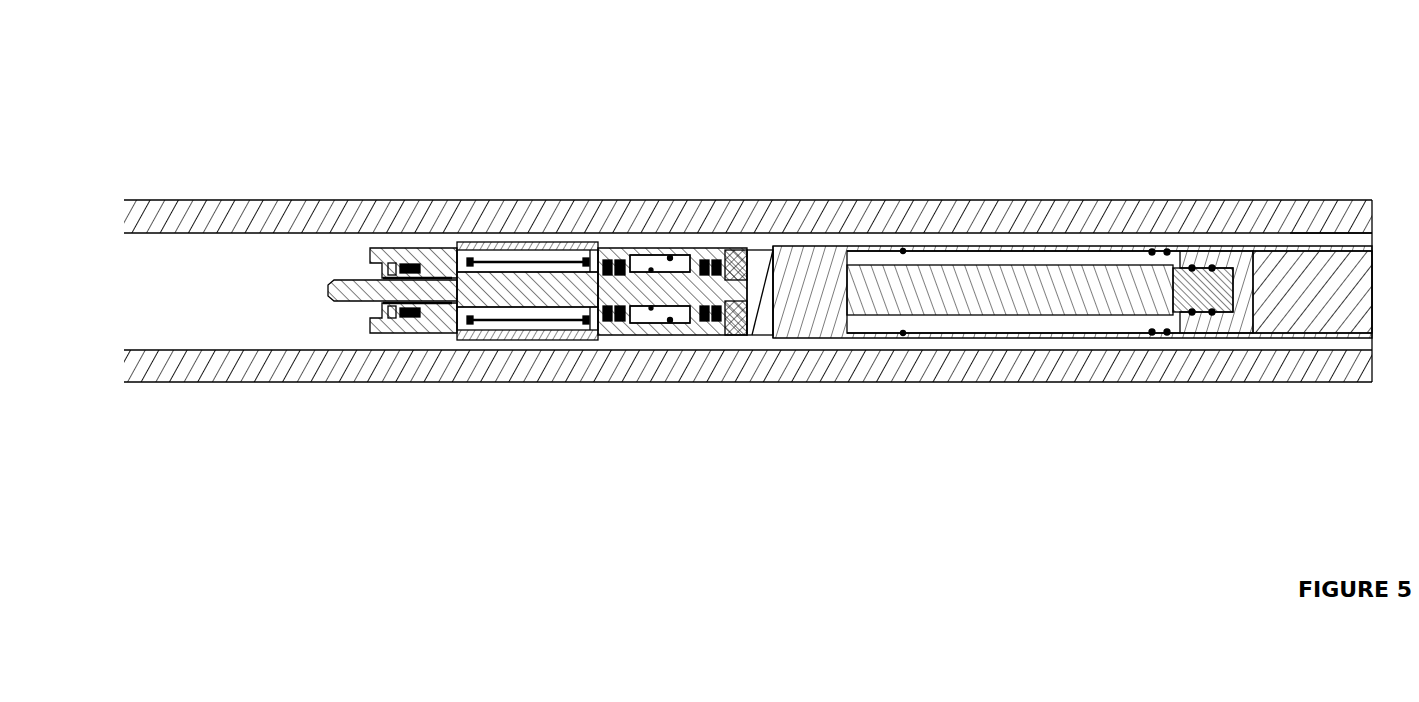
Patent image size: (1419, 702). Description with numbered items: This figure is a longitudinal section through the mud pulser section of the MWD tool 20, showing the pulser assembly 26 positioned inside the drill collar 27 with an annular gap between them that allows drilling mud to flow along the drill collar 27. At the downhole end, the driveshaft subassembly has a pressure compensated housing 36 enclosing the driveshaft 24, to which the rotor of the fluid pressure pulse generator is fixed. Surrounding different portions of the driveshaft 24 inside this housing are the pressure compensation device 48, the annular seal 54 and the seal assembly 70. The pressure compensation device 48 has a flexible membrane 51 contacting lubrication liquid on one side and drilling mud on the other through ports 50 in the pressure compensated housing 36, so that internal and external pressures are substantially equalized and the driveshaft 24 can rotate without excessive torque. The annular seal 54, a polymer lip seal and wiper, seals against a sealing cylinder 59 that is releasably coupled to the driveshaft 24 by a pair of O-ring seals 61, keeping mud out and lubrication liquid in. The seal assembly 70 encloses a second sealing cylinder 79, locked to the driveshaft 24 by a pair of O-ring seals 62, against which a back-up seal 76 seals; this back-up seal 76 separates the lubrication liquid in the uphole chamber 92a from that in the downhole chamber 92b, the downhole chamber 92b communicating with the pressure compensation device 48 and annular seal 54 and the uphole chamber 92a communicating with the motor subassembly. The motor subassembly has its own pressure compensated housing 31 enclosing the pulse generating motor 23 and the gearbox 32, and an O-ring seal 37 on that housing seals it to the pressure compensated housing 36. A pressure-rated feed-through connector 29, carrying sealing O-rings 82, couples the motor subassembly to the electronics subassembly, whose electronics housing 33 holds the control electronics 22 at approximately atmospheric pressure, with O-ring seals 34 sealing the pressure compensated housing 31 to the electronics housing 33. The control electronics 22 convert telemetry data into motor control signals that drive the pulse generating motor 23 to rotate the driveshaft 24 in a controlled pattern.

The MWD tool 20 is at (1072, 78).
The control electronics 22 is at (1345, 318).
The pulse generating motor 23 is at (938, 310).
The driveshaft 24 is at (547, 330).
The pulser assembly 26 is at (1365, 239).
The drill collar 27 is at (826, 207).
The feed-through connector 29 is at (1207, 313).
The pressure compensated housing 31 is at (1040, 333).
The gearbox 32 is at (807, 333).
The electronics housing 33 is at (1303, 335).
The O-ring seals 34 is at (1152, 335).
The pressure compensated housing 36 is at (760, 335).
The O-ring seal 37 is at (903, 250).
The pressure compensation device 48 is at (598, 247).
The ports 50 is at (512, 338).
The flexible membrane 51 is at (478, 335).
The annular seal 54 is at (420, 248).
The sealing cylinder 59 is at (447, 305).
The O-ring seals 61 is at (418, 312).
The O-ring seals 62 is at (612, 322).
The seal assembly 70 is at (747, 247).
The back-up seal 76 is at (666, 322).
The sealing cylinder 79 is at (585, 325).
The sealing O-rings 82 is at (1196, 266).
The uphole chamber 92a is at (735, 332).
The downhole chamber 92b is at (652, 325).